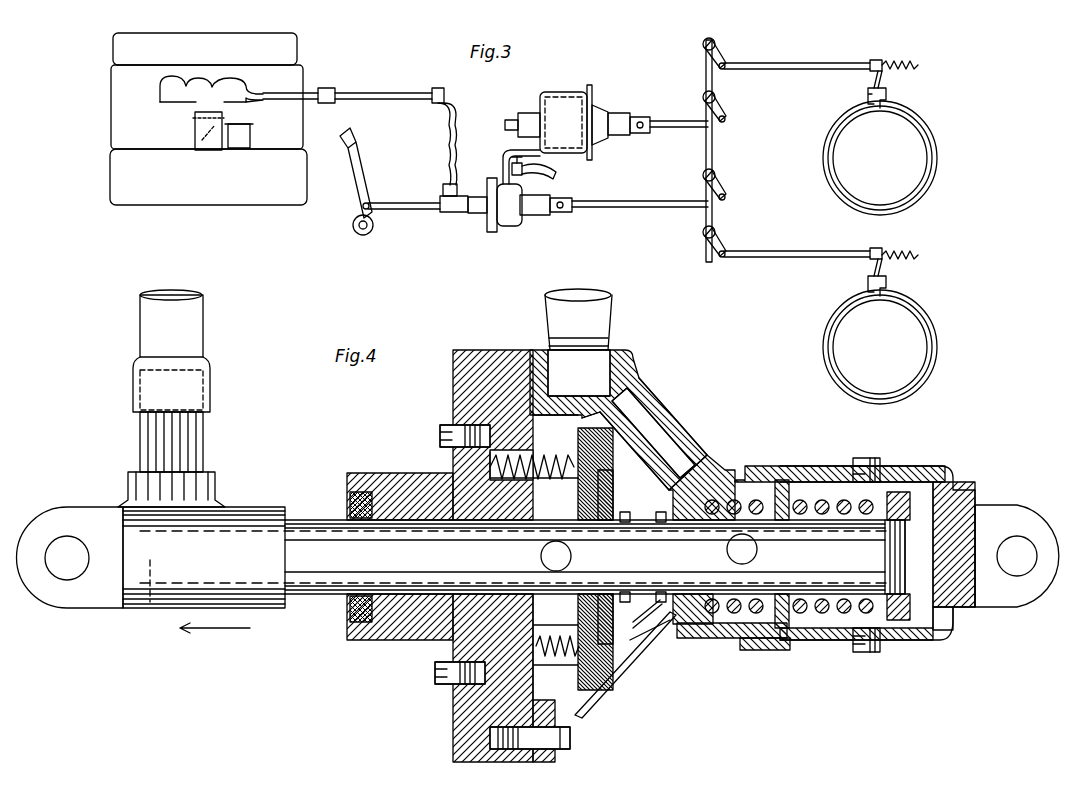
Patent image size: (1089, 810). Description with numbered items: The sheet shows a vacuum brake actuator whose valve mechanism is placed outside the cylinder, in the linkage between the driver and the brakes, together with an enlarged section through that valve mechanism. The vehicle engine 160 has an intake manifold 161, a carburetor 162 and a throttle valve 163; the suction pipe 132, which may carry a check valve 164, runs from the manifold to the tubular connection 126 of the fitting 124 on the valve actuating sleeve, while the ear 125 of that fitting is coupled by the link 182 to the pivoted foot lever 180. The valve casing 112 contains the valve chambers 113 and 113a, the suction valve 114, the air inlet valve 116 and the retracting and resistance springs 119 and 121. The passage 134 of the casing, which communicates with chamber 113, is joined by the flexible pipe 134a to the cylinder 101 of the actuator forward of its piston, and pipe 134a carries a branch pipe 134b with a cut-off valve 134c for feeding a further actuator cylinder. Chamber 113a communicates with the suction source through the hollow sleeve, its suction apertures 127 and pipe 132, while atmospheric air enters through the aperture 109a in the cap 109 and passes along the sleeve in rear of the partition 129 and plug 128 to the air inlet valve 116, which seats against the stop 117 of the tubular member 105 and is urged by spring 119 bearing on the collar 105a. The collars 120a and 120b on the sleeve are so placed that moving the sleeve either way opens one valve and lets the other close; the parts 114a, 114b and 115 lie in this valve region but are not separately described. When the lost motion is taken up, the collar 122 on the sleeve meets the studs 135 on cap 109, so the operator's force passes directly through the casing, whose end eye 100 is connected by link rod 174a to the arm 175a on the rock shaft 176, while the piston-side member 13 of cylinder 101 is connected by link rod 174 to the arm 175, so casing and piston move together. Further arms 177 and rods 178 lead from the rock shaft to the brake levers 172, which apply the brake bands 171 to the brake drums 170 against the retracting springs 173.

In FIG. 3, the engine 160 is at (287, 56).
In FIG. 3, the intake manifold 161 is at (158, 90).
In FIG. 3, the carburetor 162 is at (240, 142).
In FIG. 3, the throttle valve 163 is at (200, 152).
In FIG. 3, the check valve 164 is at (334, 92).
In FIG. 3, the suction pipe 132 is at (452, 110).
In FIG. 4, the suction pipe 132 is at (194, 337).
In FIG. 3, the foot lever 180 is at (355, 146).
In FIG. 3, the link 182 is at (402, 210).
In FIG. 3, the ear 125 is at (456, 212).
In FIG. 4, the ear 125 is at (65, 518).
In FIG. 3, the valve casing 112 is at (500, 224).
In FIG. 4, the valve casing 112 is at (632, 366).
In FIG. 3, the flexible tubular connection 134a is at (503, 166).
In FIG. 4, the flexible tubular connection 134a is at (607, 324).
In FIG. 3, the branch pipe 134b is at (560, 176).
In FIG. 3, the cut off valve 134c is at (537, 178).
In FIG. 3, the cylinder 101 is at (560, 86).
In FIG. 3, the power cylinder piston rod 13 is at (590, 111).
In FIG. 3, the link rod 174 is at (676, 129).
In FIG. 3, the link rod 174a is at (668, 208).
In FIG. 3, the rock shaft 176 is at (712, 147).
In FIG. 3, the arm 175 is at (726, 114).
In FIG. 3, the arm 175a is at (726, 194).
In FIG. 3, the crank arm 177 is at (724, 58).
In FIG. 3, the brake rod 178 is at (805, 68).
In FIG. 3, the retracting spring 173 is at (903, 58).
In FIG. 3, the brake lever 172 is at (872, 86).
In FIG. 3, the brake drum 170 is at (835, 156).
In FIG. 3, the brake band 171 is at (937, 152).
In FIG. 4, the fitting 124 is at (147, 606).
In FIG. 4, the tubular connection 126 is at (205, 456).
In FIG. 4, the valve chamber 113a is at (600, 425).
In FIG. 4, the bore 115 is at (640, 440).
In FIG. 4, the passage 134 is at (655, 445).
In FIG. 4, the suction valve 114 is at (612, 482).
In FIG. 4, the gland spring 114a is at (586, 494).
In FIG. 4, the gland spring 114b is at (612, 494).
In FIG. 4, the air inlet valve 116 is at (705, 492).
In FIG. 4, the plug or partition 129 is at (745, 546).
In FIG. 4, the spring 119 is at (782, 468).
In FIG. 4, the retracting spring 121 is at (816, 500).
In FIG. 4, the studs 135 is at (868, 458).
In FIG. 4, the cap 109 is at (895, 468).
In FIG. 4, the anchor eye 100 is at (1006, 512).
In FIG. 4, the aperture 109a is at (955, 622).
In FIG. 4, the collar 122 is at (900, 622).
In FIG. 4, the suction apertures 127 is at (557, 572).
In FIG. 4, the plug 128 is at (640, 590).
In FIG. 4, the collar 120a is at (650, 660).
In FIG. 4, the collar 120b is at (664, 632).
In FIG. 4, the valve chamber 113 is at (625, 700).
In FIG. 4, the valve seat 117 is at (690, 626).
In FIG. 4, the tubular piston rod 105 is at (732, 640).
In FIG. 4, the collar 105a is at (770, 650).